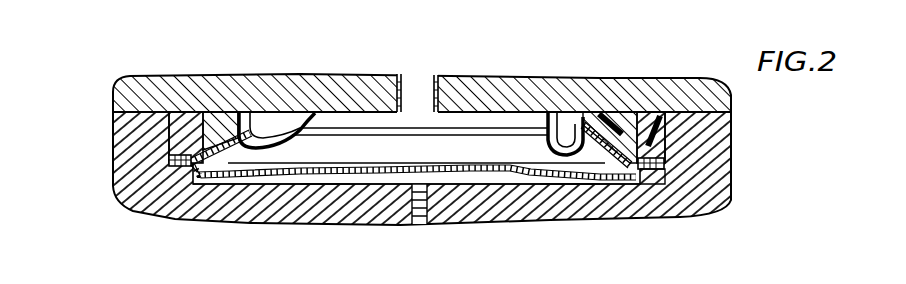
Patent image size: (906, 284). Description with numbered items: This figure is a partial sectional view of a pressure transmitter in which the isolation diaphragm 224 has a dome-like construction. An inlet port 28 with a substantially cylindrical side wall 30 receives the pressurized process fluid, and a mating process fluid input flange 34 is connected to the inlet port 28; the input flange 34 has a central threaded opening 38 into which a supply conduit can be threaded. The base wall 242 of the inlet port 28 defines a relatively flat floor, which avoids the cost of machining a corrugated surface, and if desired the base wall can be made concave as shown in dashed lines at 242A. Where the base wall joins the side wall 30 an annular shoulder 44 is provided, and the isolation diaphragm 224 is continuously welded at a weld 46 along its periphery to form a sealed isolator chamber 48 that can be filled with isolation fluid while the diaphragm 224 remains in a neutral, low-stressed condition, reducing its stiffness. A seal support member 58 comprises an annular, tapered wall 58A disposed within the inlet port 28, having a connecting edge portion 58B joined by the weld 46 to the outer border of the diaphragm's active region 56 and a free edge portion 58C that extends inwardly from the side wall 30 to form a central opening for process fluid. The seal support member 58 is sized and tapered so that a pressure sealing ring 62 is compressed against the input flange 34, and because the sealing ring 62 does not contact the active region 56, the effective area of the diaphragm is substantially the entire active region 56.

The inlet port 28 is at (456, 128).
The side wall 30 is at (665, 128).
The process fluid input flange 34 is at (647, 90).
The central threaded opening 38 is at (430, 90).
The annular shoulder 44 is at (640, 170).
The weld 46 is at (662, 170).
The isolator chamber 48 is at (498, 181).
The active region 56 is at (612, 163).
The seal support member 58 is at (562, 121).
The tapered wall 58A is at (298, 130).
The connecting edge portion 58B is at (186, 162).
The free edge portion 58C is at (262, 140).
The pressure sealing ring 62 is at (200, 138).
The isolation diaphragm 224 is at (565, 182).
The base wall 242 is at (278, 186).
The concave base wall 242A is at (323, 187).